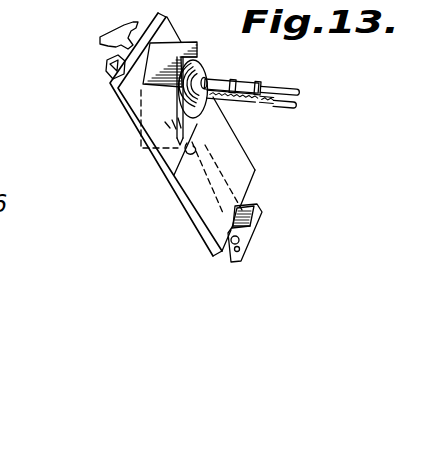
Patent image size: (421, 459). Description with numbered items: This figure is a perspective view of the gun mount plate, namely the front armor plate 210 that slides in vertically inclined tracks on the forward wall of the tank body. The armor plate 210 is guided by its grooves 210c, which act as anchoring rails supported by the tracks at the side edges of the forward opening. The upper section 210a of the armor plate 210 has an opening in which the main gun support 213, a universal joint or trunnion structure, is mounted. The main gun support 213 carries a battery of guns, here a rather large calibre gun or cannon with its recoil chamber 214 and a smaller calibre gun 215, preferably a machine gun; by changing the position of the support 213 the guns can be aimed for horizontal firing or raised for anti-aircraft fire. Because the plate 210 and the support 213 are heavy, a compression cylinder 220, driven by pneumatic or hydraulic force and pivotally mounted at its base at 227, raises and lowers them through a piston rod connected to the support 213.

The front armor plate 210 is at (201, 208).
The grooves 210c is at (116, 58).
The upper section of armor plate 210a is at (184, 161).
The main gun support 213 is at (180, 46).
The large calibre gun and recoil chamber 214 is at (274, 81).
The smaller calibre gun 215 is at (273, 101).
The compression cylinder 220 is at (240, 208).
The pivotal base mounting of cylinder 227 is at (244, 242).